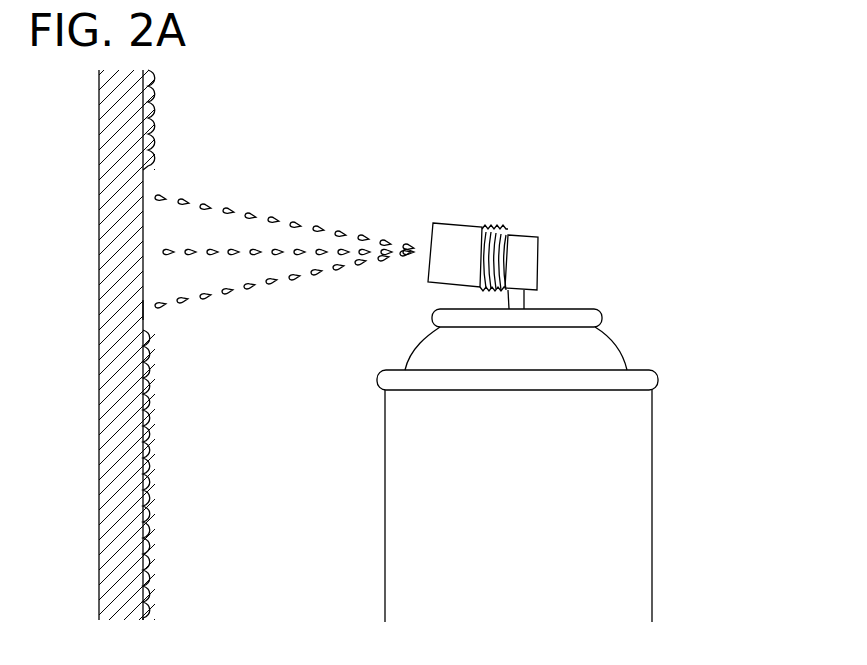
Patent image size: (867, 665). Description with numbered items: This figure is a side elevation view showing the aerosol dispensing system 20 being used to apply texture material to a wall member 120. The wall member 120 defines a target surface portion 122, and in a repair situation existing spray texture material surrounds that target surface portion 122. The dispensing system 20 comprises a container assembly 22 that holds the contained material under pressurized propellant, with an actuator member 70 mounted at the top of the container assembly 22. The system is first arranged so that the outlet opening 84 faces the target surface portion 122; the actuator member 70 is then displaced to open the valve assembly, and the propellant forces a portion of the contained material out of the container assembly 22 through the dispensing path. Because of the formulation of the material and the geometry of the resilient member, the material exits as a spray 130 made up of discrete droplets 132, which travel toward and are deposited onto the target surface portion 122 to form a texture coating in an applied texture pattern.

The aerosol dispensing system 20 is at (557, 457).
The container assembly 22 is at (662, 446).
The actuator member 70 is at (478, 248).
The outlet opening 84 is at (427, 252).
The wall member 120 is at (114, 437).
The target surface portion 122 is at (145, 275).
The spray 130 is at (285, 225).
The droplets 132 is at (314, 247).